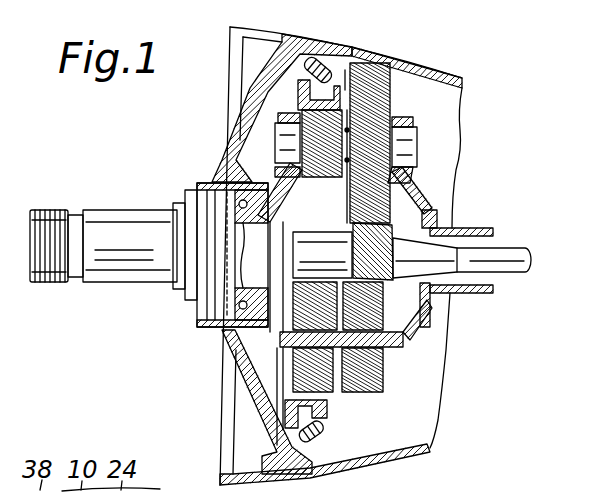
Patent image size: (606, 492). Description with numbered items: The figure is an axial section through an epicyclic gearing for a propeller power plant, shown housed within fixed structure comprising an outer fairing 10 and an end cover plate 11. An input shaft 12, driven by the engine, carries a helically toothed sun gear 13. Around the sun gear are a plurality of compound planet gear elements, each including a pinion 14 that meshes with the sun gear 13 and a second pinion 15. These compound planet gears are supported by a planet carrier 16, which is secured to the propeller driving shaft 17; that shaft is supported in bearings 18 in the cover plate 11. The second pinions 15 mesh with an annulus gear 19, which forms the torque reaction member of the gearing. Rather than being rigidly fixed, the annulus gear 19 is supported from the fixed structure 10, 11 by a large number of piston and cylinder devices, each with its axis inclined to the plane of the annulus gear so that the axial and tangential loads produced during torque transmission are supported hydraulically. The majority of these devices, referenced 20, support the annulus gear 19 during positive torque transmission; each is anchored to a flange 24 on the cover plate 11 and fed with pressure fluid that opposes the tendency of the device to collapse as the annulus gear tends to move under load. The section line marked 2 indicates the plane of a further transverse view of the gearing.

The section line 2 is at (325, 34).
The outer fairing 10 is at (442, 66).
The end cover plate 11 is at (292, 90).
The input shaft 12 is at (510, 247).
The sun gear 13 is at (395, 226).
The pinion 14 is at (393, 98).
The second pinion 15 is at (275, 136).
The planet carrier 16 is at (405, 340).
The propeller driving shaft 17 is at (106, 283).
The bearings 18 is at (244, 329).
The annulus gear 19 is at (298, 100).
The piston and cylinder devices 20 is at (400, 73).
The flange 24 is at (318, 62).